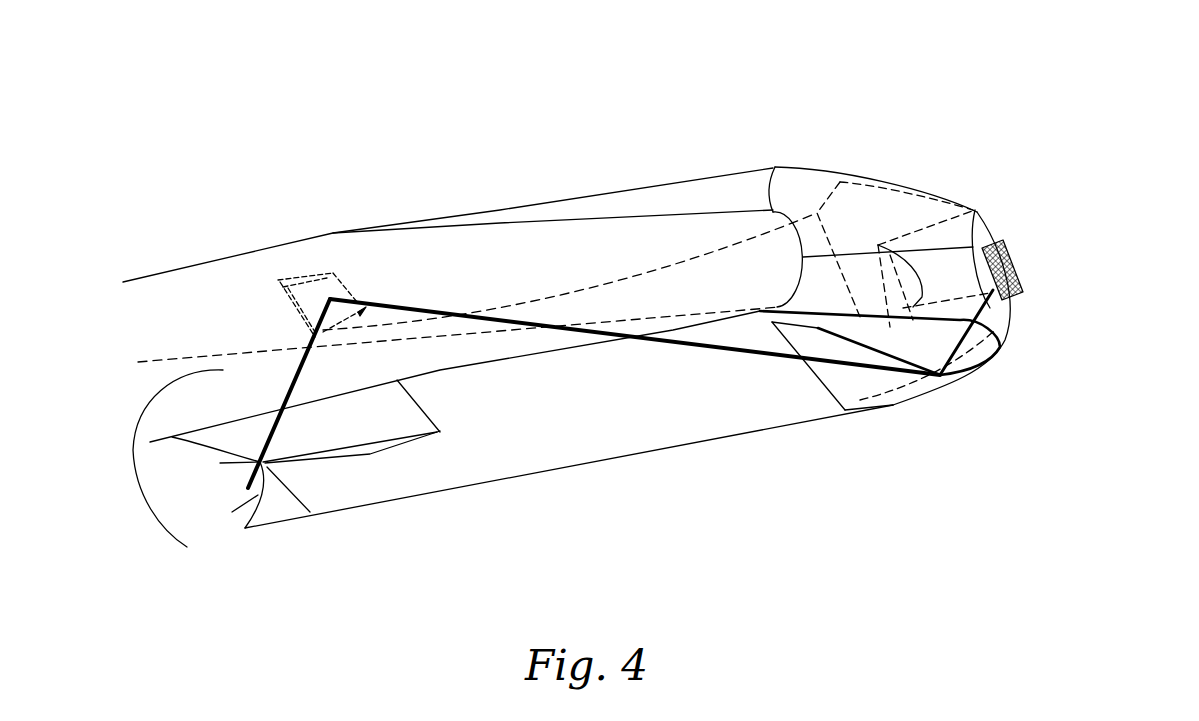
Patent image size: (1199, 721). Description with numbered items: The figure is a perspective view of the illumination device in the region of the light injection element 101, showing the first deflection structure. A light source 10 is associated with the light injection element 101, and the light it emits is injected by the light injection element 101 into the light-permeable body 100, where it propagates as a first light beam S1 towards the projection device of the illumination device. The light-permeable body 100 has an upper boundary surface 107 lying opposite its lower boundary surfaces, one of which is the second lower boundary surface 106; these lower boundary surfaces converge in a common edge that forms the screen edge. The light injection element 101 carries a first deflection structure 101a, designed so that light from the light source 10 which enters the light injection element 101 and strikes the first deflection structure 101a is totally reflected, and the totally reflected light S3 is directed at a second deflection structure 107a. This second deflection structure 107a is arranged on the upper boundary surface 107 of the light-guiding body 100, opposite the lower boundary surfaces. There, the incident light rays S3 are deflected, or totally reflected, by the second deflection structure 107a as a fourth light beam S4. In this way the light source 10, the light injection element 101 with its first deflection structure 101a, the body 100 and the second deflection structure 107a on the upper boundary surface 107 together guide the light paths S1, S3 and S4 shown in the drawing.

The light source 10 is at (1008, 242).
The light-permeable body 100 is at (220, 284).
The light injection element 101 is at (873, 222).
The first deflection structure 101a is at (930, 393).
The second lower boundary surface 106 is at (475, 402).
The upper boundary surface 107 is at (480, 273).
The second deflection structure 107a is at (330, 296).
The first light beam S1 is at (995, 325).
The totally reflected light S3 is at (658, 342).
The fourth light beam S4 is at (231, 443).